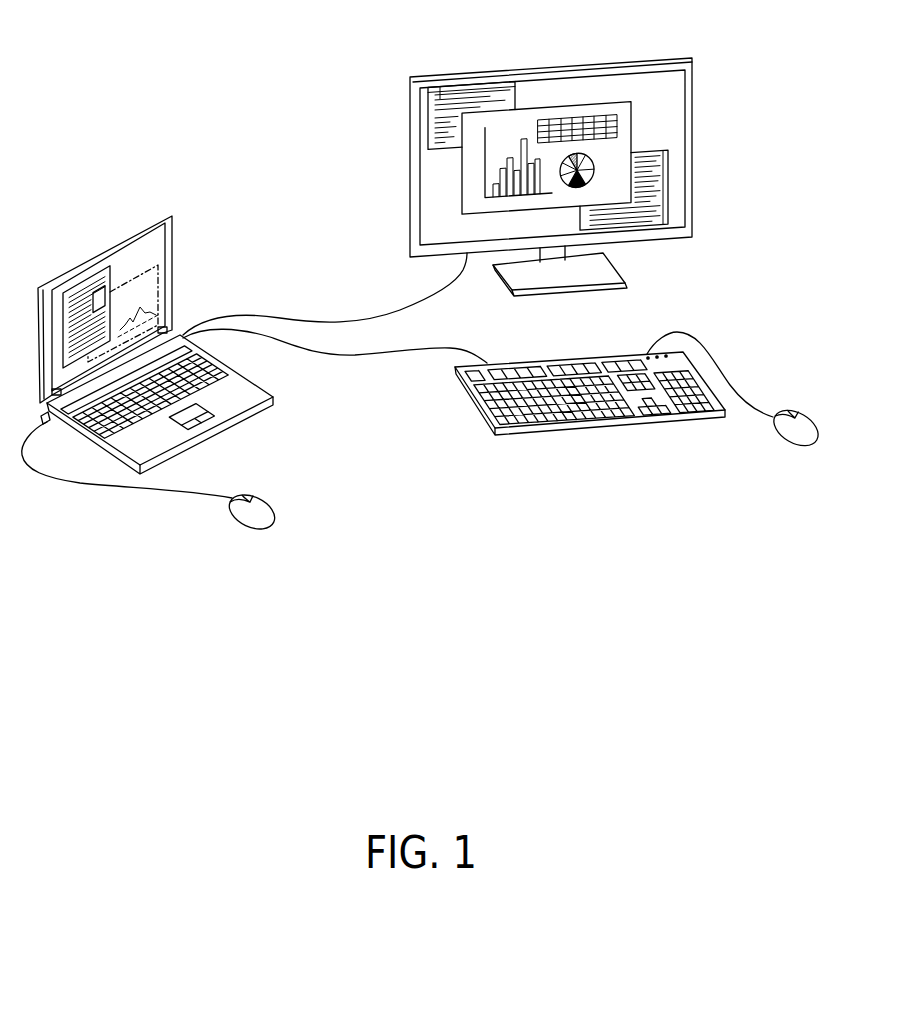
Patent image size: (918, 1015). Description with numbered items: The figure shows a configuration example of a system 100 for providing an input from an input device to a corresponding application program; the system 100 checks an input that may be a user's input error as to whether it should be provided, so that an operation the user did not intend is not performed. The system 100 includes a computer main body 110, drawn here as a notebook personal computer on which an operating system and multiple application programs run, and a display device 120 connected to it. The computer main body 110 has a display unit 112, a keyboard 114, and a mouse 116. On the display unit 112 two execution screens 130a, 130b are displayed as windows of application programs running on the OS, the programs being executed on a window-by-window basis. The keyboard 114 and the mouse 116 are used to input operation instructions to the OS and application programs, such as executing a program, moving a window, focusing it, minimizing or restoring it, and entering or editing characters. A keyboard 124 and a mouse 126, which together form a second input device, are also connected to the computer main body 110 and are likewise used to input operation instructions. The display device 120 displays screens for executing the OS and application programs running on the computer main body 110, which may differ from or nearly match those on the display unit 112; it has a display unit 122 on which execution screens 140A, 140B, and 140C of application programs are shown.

The system 100 is at (428, 613).
The computer main body 110 is at (55, 282).
The display unit 112 is at (157, 252).
The keyboard 114 is at (210, 383).
The mouse 116 is at (273, 518).
The display device 120 is at (693, 175).
The display unit 122 is at (672, 100).
The keyboard 124 is at (578, 363).
The mouse 126 is at (793, 447).
The execution screen 130a is at (105, 268).
The execution screen 130b is at (146, 282).
The execution screen 140A is at (552, 110).
The execution screen 140B is at (648, 153).
The execution screen 140C is at (478, 92).